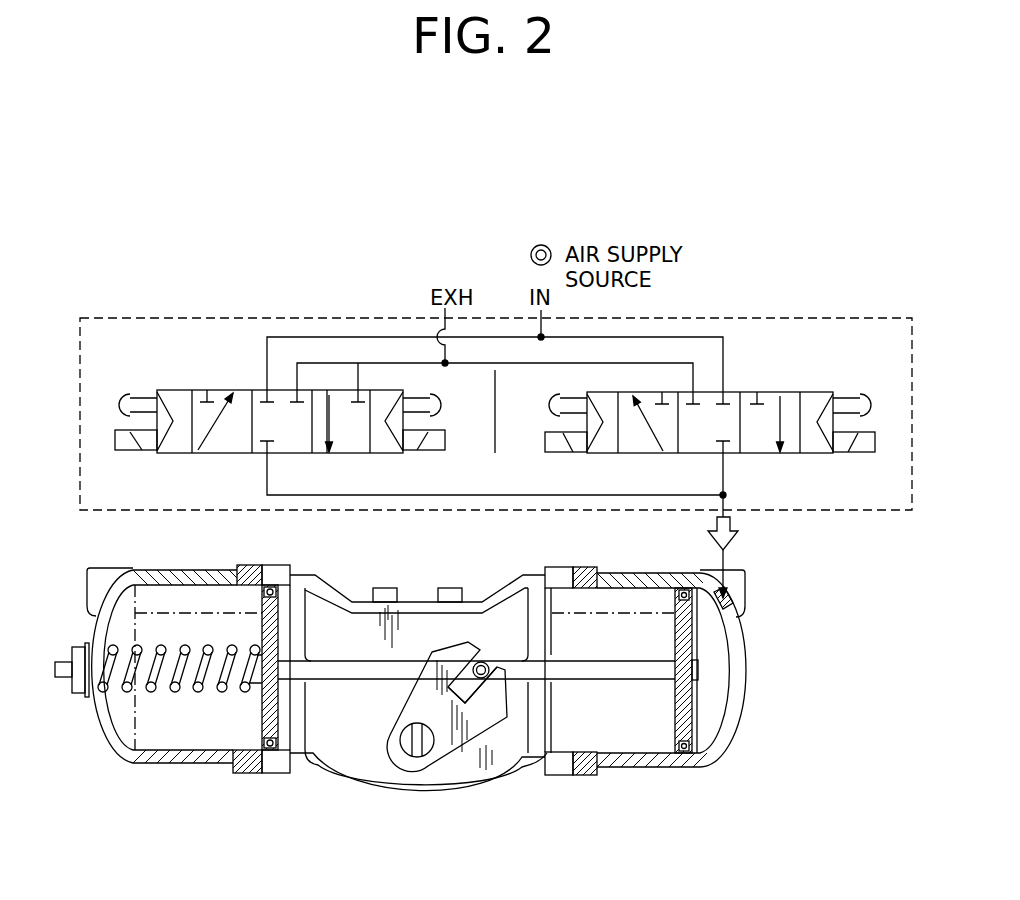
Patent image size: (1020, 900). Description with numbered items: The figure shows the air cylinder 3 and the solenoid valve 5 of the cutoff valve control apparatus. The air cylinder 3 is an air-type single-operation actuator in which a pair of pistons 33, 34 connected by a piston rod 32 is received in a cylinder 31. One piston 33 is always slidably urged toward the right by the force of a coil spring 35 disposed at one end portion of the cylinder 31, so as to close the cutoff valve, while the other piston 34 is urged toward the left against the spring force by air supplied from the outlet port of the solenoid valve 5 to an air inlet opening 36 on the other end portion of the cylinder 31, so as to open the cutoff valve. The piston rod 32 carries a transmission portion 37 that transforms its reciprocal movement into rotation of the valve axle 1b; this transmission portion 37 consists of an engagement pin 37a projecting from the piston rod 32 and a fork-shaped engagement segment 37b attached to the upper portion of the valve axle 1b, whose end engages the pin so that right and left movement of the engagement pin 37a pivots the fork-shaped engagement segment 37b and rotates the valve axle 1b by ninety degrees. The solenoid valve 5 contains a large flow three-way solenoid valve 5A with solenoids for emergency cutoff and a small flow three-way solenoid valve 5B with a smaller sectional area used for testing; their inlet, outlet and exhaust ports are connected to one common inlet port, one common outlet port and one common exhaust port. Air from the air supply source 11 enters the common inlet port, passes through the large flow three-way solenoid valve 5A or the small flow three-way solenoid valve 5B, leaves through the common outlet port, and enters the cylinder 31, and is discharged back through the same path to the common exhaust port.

The air supply source 11 is at (541, 243).
The solenoid valve 5 is at (765, 318).
The large flow three-way solenoid valve 5A is at (782, 392).
The small flow three-way solenoid valve 5B is at (220, 390).
The cylinder 31 is at (747, 680).
The piston rod 32 is at (343, 680).
The piston 33 is at (262, 722).
The piston 34 is at (697, 718).
The coil spring 35 is at (130, 698).
The air inlet opening 36 is at (729, 603).
The transmission portion 37 is at (479, 696).
The engagement pin 37a is at (488, 660).
The fork-shaped engagement segment 37b is at (442, 652).
The valve axle 1b is at (405, 757).
The air cylinder 3 is at (468, 785).